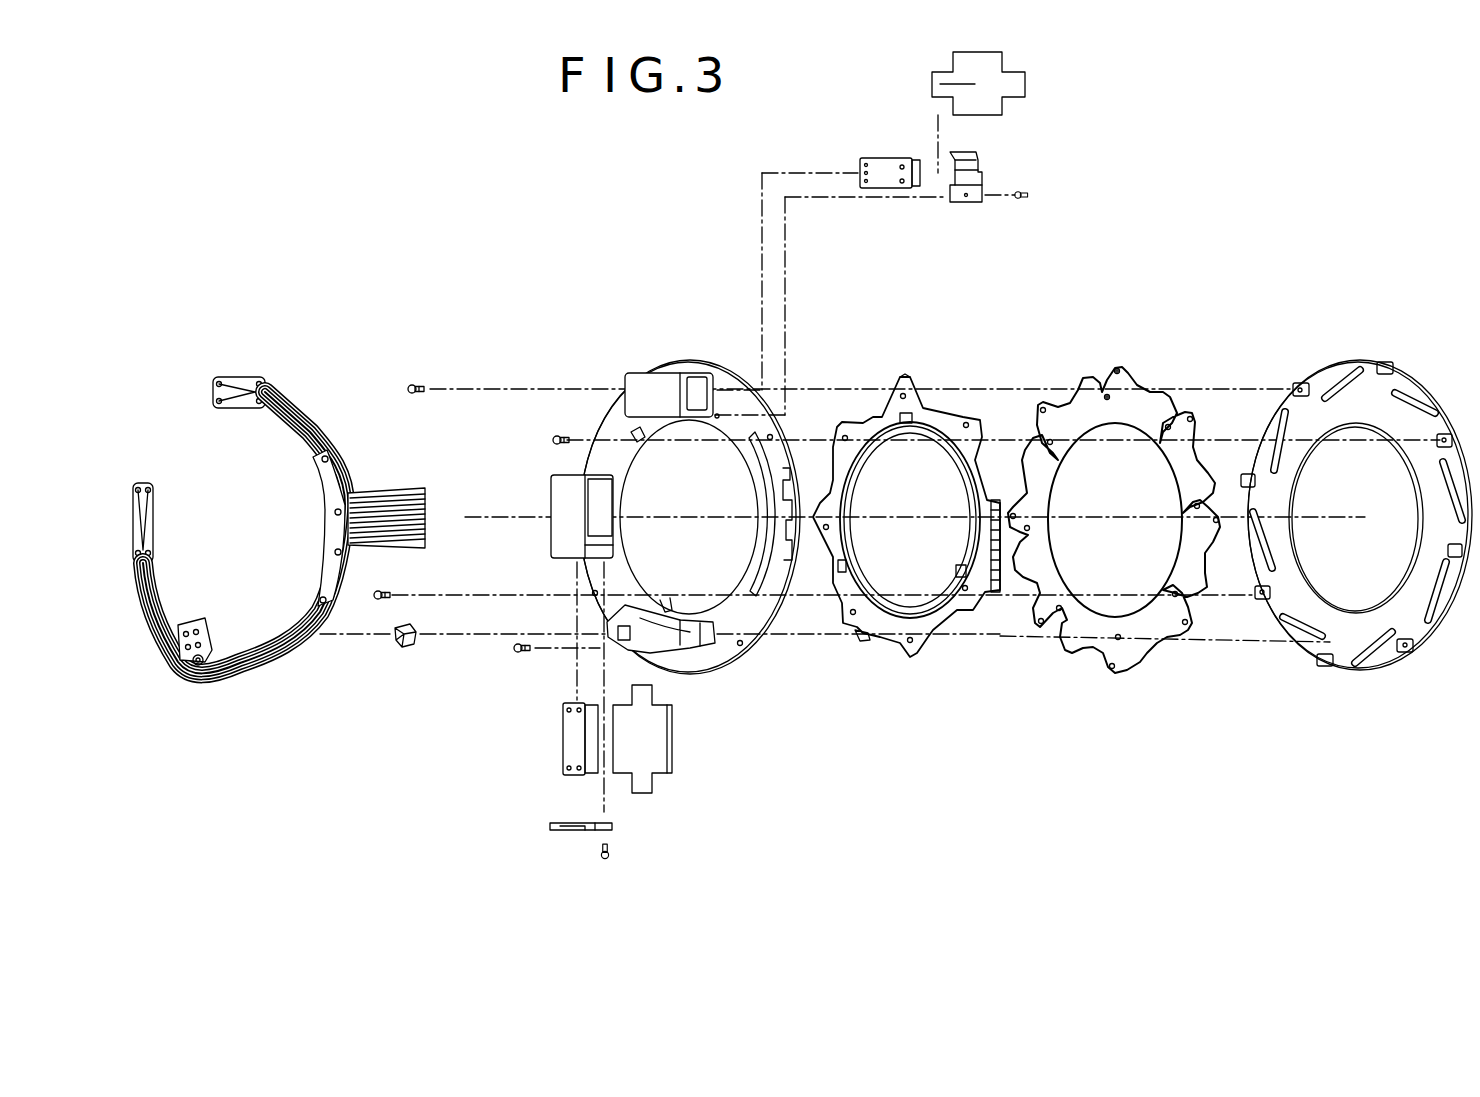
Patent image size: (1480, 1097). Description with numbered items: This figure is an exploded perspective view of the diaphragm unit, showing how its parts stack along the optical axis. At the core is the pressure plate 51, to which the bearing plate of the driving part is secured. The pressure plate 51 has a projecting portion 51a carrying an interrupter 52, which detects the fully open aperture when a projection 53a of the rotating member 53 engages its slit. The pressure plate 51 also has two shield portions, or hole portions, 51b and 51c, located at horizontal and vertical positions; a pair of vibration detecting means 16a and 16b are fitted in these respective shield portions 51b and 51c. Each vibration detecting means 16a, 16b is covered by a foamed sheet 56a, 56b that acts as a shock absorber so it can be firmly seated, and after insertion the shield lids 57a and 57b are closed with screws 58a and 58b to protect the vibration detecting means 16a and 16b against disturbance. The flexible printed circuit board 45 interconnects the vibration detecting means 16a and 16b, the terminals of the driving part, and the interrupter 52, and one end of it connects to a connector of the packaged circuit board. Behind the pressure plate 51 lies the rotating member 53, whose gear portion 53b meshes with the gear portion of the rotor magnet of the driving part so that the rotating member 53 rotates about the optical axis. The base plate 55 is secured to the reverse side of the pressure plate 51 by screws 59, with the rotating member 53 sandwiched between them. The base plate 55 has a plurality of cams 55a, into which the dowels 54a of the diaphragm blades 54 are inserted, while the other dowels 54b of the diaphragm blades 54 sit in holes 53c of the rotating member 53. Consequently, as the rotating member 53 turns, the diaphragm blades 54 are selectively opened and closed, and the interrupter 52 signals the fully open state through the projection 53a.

The flexible printed circuit board 45 is at (235, 385).
The screws 59 is at (412, 385).
The interrupter 52 is at (403, 648).
The pressure plate 51 is at (750, 605).
The projecting portion 51a is at (690, 635).
The shield portion (hole portion) 51b is at (560, 538).
The shield portion (hole portion) 51c is at (645, 395).
The rotating member 53 is at (915, 655).
The projection 53a is at (860, 640).
The gear portion 53b is at (990, 580).
The holes 53c is at (905, 392).
The diaphragm blades 54 is at (1137, 665).
The dowels 54a is at (1119, 370).
The dowels 54b is at (1107, 395).
The base plate 55 is at (1340, 655).
The cams 55a is at (1268, 605).
The vibration detecting means 16a is at (570, 742).
The vibration detecting means 16b is at (900, 180).
The foamed sheet 56a is at (642, 790).
The foamed sheet 56b is at (1015, 85).
The shield lid 57a is at (580, 835).
The shield lid 57b is at (975, 185).
The screw 58a is at (612, 855).
The screw 58b is at (1025, 197).